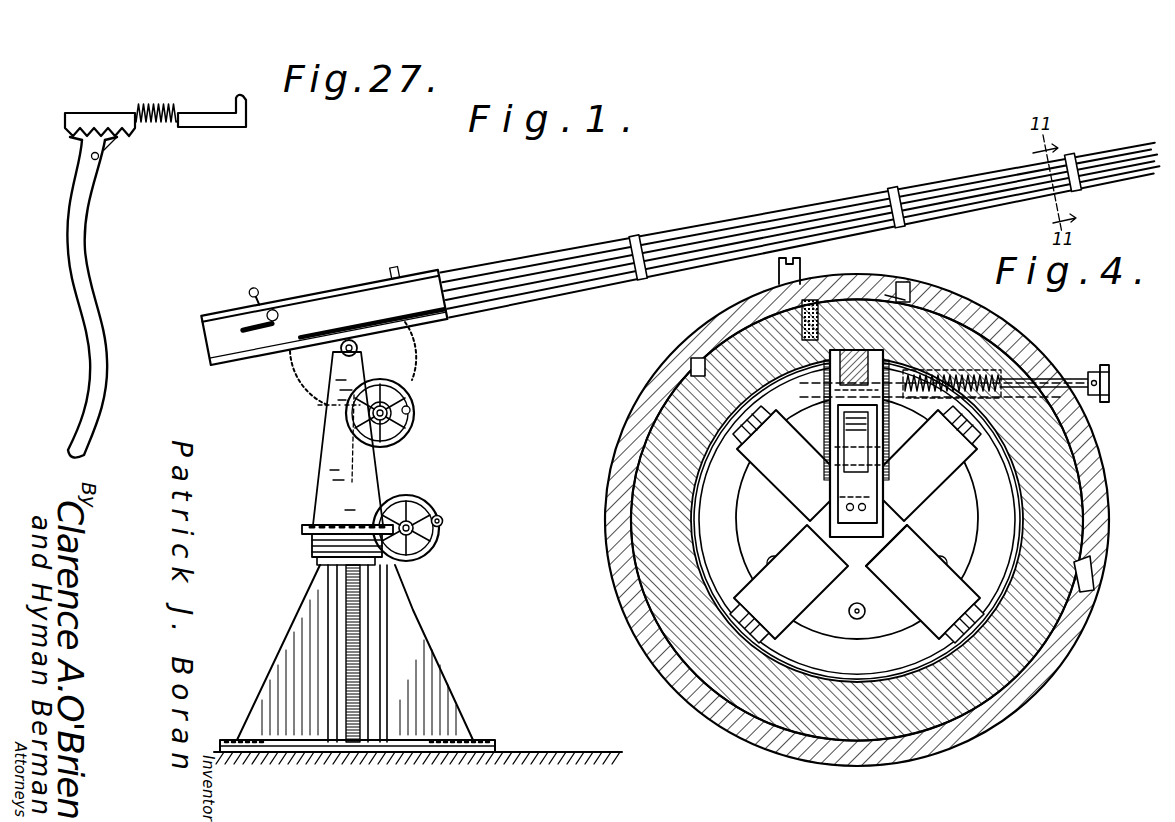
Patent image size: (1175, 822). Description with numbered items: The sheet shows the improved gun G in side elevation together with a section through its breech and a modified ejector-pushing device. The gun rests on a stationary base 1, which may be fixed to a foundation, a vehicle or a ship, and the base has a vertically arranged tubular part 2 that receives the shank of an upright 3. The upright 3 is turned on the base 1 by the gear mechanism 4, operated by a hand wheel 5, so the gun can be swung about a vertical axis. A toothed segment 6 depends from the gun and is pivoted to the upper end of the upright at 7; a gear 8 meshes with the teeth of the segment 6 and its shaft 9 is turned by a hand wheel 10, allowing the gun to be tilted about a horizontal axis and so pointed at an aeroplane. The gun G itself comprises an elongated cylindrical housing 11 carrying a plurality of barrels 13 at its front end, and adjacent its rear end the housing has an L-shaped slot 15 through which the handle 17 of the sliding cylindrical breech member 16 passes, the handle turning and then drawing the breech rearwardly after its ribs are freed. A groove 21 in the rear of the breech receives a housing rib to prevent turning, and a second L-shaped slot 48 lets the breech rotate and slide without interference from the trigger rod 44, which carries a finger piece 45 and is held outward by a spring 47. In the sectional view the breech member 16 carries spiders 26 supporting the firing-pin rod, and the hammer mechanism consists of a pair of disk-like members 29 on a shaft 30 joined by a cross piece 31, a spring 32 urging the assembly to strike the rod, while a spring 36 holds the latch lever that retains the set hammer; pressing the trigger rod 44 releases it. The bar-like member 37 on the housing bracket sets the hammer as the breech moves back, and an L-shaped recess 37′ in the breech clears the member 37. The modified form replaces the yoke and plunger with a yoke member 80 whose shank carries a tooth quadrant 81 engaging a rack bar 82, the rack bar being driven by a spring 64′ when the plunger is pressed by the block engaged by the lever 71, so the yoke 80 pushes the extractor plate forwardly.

In FIG. 1, the stationary base 1 is at (436, 686).
In FIG. 1, the tubular part 2 is at (335, 626).
In FIG. 1, the upright 3 is at (330, 480).
In FIG. 1, the gear mechanism 4 is at (407, 500).
In FIG. 1, the hand wheel 5 is at (442, 526).
In FIG. 1, the toothed segment 6 is at (396, 362).
In FIG. 1, the pivot 7 is at (359, 348).
In FIG. 1, the gear 8 is at (350, 449).
In FIG. 1, the shaft 9 is at (405, 438).
In FIG. 1, the hand wheel 10 is at (414, 400).
In FIG. 1, the cylindrical housing 11 is at (320, 292).
In FIG. 4, the cylindrical housing 11 is at (1104, 496).
In FIG. 1, the barrels 13 is at (796, 199).
In FIG. 4, the L-shaped slot 15 is at (987, 319).
In FIG. 4, the breech member 16 is at (1050, 538).
In FIG. 1, the handle 17 is at (261, 278).
In FIG. 4, the handle 17 is at (782, 270).
In FIG. 4, the groove 21 is at (690, 368).
In FIG. 4, the spiders 26 is at (800, 564).
In FIG. 4, the disk-like members 29 is at (836, 492).
In FIG. 4, the shaft 30 is at (830, 456).
In FIG. 4, the cross piece 31 is at (866, 534).
In FIG. 4, the spring 32 is at (912, 498).
In FIG. 4, the spring 36 is at (808, 435).
In FIG. 4, the bar-like member 37 is at (912, 302).
In FIG. 4, the L-shaped recess 37′ is at (893, 278).
In FIG. 4, the trigger rod 44 is at (1080, 378).
In FIG. 1, the finger piece 45 is at (286, 284).
In FIG. 4, the finger piece 45 is at (1110, 384).
In FIG. 4, the spring 47 is at (934, 416).
In FIG. 1, the slot 48 is at (280, 322).
In FIG. 4, the slot 48 is at (1088, 578).
In FIG. 27, the spring 64′ is at (160, 120).
In FIG. 1, the lever 71 is at (402, 247).
In FIG. 27, the yoke member 80 is at (103, 286).
In FIG. 27, the tooth quadrant 81 is at (116, 142).
In FIG. 27, the rack bar 82 is at (100, 122).
In FIG. 1, the gun G is at (444, 243).